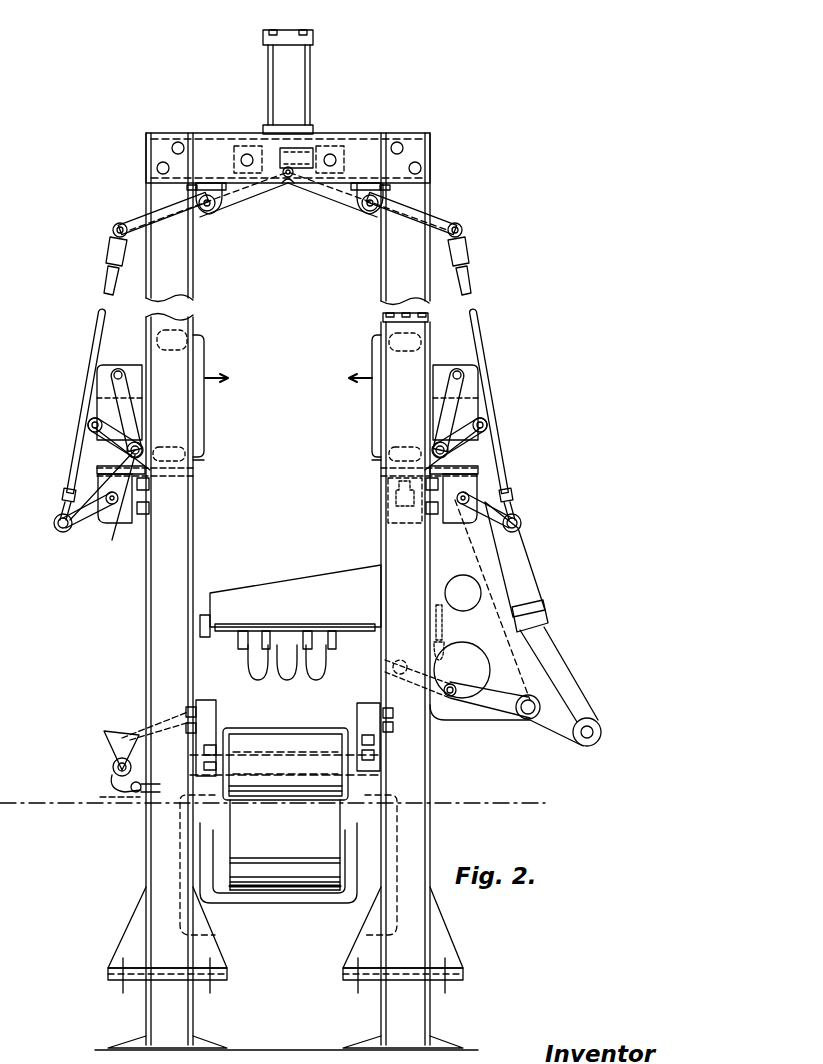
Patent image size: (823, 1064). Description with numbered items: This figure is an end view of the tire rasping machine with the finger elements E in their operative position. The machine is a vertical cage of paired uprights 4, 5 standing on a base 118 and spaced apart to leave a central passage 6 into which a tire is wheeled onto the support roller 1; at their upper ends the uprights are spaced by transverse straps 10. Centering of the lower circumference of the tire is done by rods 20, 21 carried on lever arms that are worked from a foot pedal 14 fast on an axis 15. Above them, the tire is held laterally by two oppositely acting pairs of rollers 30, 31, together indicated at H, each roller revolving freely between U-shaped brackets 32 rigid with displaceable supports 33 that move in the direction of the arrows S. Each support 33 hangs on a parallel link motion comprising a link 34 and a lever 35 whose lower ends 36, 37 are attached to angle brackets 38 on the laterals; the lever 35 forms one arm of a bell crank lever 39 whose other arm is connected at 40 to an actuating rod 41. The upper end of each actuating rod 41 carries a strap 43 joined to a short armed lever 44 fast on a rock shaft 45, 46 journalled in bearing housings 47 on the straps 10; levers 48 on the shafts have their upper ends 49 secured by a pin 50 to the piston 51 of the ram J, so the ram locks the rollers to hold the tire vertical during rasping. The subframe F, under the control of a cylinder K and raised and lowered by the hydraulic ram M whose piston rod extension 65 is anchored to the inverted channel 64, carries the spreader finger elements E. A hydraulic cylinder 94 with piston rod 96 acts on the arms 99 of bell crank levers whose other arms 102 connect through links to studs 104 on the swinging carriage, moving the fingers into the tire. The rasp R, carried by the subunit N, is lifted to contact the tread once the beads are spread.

The transverse strap 10 is at (212, 137).
The ram J is at (292, 90).
The piston 51 is at (300, 147).
The upper end of lever 49 is at (292, 182).
The pin 50 is at (282, 198).
The lever 48 is at (262, 200).
The rock shaft 45 is at (210, 210).
The rock shaft 46 is at (366, 212).
The bearing housing 47 is at (200, 183).
The short armed lever 44 is at (125, 228).
The strap 43 is at (105, 246).
The hydraulic ram M is at (383, 316).
The roller 31 is at (204, 373).
The roller 30 is at (372, 370).
The rollers H is at (205, 440).
The arrows S is at (288, 389).
The U-shaped bracket 32 is at (157, 338).
The displaceable support 33 is at (98, 405).
The link 34 is at (120, 409).
The lever 35 is at (100, 445).
The lower end of link 36 is at (100, 470).
The lower end of lever 37 is at (116, 508).
The actuating rod 41 is at (96, 336).
The connection point 40 is at (54, 524).
The bell crank lever 39 is at (87, 526).
The angle bracket 38 is at (150, 477).
The hydraulic cylinder 94 is at (520, 582).
The cylinder K is at (540, 565).
The piston rod 96 is at (556, 672).
The arm of bell crank lever 99 is at (546, 720).
The arm of bell crank lever 102 is at (482, 680).
The stud 104 is at (398, 676).
The inverted channel 64 is at (422, 557).
The extension 65 is at (394, 520).
The central passage 6 is at (307, 543).
The subframe F is at (290, 607).
The finger element E is at (287, 673).
The roller 1 is at (283, 730).
The rod 20 is at (218, 706).
The rod 21 is at (360, 710).
The foot pedal 14 is at (150, 735).
The axis 15 is at (110, 770).
The rasp R is at (250, 845).
The subunit N is at (290, 935).
The upright 4 is at (160, 833).
The upright 5 is at (410, 840).
The base 118 is at (390, 1002).